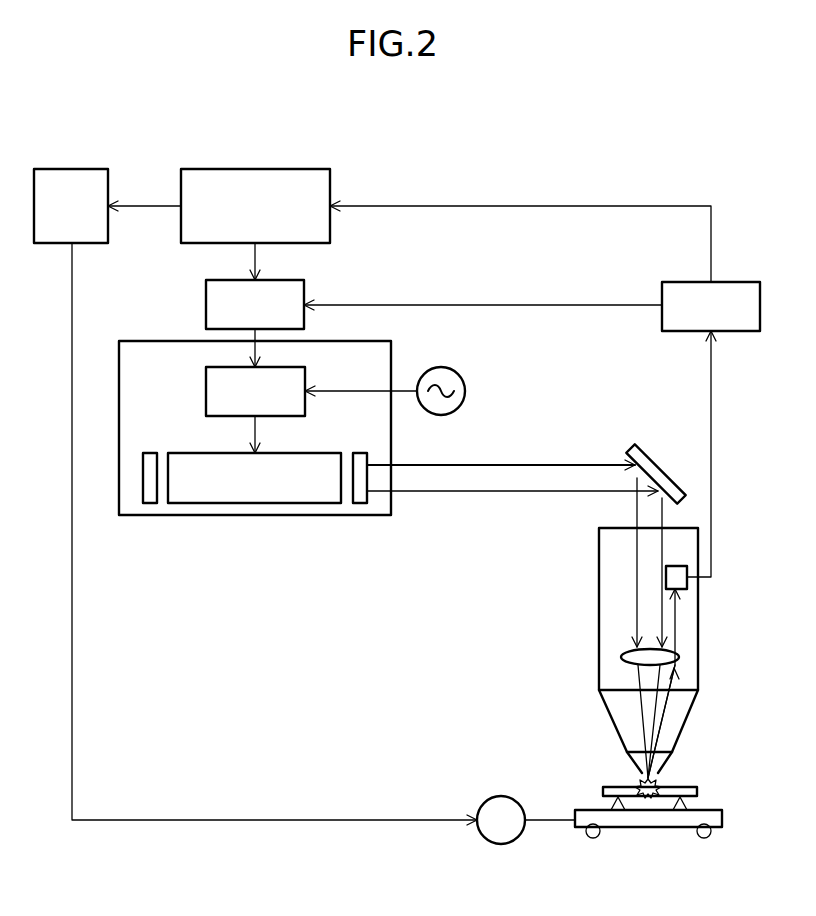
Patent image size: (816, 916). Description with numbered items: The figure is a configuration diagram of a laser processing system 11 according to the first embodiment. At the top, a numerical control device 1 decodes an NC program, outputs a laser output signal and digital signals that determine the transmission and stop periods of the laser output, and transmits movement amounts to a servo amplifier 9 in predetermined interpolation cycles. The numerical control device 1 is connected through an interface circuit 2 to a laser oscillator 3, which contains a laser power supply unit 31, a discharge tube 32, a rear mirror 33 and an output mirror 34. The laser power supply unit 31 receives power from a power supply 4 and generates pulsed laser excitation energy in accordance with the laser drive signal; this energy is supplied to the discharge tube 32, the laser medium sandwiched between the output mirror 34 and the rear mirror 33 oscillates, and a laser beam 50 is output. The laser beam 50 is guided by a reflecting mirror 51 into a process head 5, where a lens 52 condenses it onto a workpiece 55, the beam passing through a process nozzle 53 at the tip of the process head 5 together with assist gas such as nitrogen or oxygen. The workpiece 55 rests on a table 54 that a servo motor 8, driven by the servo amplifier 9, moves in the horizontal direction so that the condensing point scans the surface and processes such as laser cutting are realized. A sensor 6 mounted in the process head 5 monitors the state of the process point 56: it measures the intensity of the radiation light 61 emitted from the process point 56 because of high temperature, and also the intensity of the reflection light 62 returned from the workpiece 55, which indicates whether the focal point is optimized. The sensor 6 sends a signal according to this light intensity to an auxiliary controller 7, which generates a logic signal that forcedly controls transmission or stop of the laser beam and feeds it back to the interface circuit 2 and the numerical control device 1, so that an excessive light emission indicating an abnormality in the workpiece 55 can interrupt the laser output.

The laser processing system 11 is at (468, 167).
The numerical control device 1 is at (285, 168).
The interface circuit 2 is at (307, 292).
The laser oscillator 3 is at (150, 340).
The laser power supply unit 31 is at (305, 380).
The discharge tube 32 is at (243, 505).
The rear mirror 33 is at (143, 505).
The output mirror 34 is at (356, 505).
The power supply 4 is at (465, 377).
The process head 5 is at (599, 583).
The laser beam 50 is at (497, 485).
The reflecting mirror 51 is at (640, 447).
The lens 52 is at (621, 657).
The process nozzle 53 is at (630, 772).
The table 54 is at (683, 830).
The workpiece 55 is at (698, 793).
The process point 56 is at (645, 797).
The sensor 6 is at (688, 593).
The radiation light 61 is at (675, 622).
The reflection light 62 is at (661, 721).
The auxiliary controller 7 is at (722, 282).
The servo motor 8 is at (497, 794).
The servo amplifier 9 is at (83, 168).